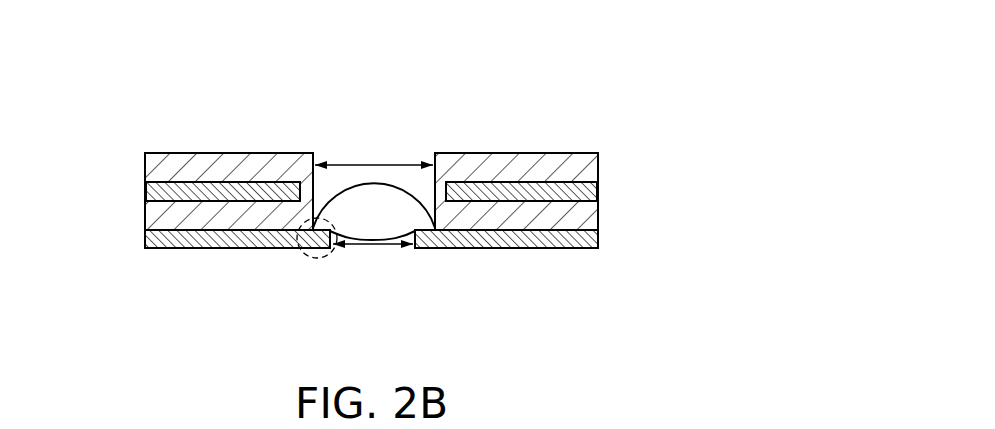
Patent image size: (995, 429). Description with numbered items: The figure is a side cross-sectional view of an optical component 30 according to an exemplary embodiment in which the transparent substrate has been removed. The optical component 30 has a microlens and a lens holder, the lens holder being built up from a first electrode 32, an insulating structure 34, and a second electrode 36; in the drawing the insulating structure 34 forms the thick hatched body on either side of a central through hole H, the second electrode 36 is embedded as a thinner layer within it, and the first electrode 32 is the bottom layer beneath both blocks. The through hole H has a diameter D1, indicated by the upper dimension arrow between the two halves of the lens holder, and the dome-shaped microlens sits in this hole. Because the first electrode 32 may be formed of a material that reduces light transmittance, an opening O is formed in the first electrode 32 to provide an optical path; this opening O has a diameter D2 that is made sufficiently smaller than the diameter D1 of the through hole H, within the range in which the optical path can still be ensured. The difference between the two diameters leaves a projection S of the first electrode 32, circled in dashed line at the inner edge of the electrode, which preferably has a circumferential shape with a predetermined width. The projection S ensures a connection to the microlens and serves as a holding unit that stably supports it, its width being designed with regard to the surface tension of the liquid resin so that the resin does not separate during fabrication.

The optical component 30 is at (373, 145).
The first electrode 32 is at (598, 241).
The insulating structure 34 is at (145, 165).
The second electrode 36 is at (598, 192).
The through hole H is at (346, 143).
The diameter of the through hole D1 is at (374, 151).
The diameter of the opening D2 is at (358, 250).
The projection S is at (322, 258).
The opening O is at (388, 263).